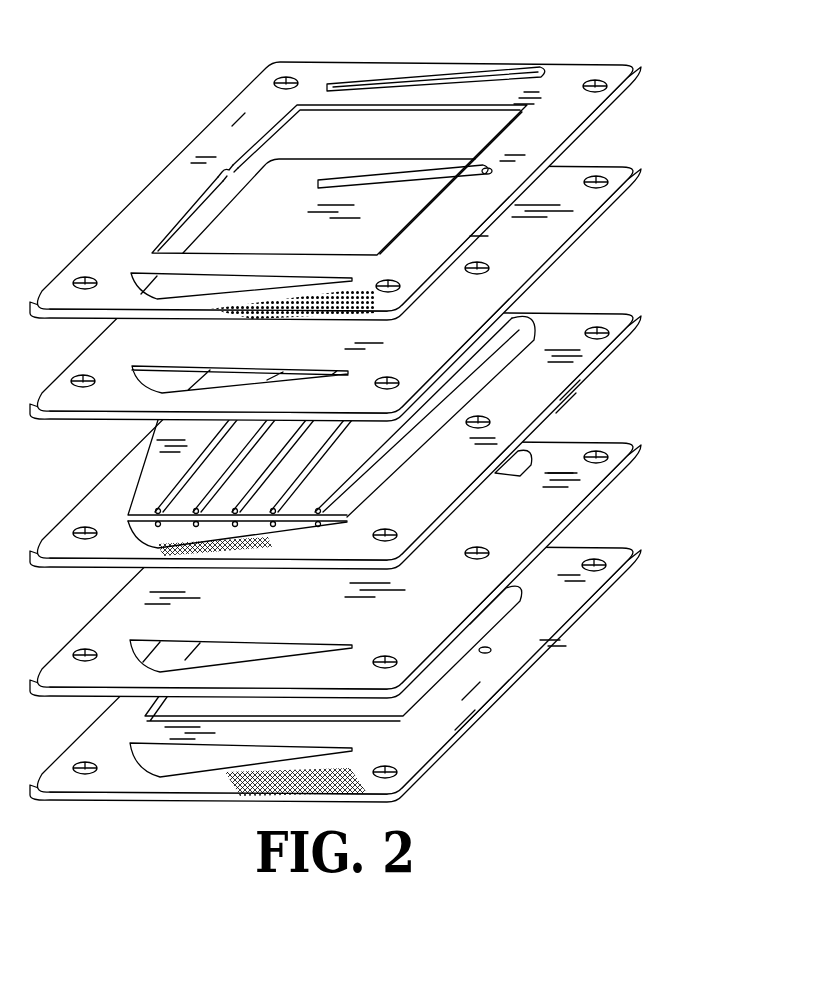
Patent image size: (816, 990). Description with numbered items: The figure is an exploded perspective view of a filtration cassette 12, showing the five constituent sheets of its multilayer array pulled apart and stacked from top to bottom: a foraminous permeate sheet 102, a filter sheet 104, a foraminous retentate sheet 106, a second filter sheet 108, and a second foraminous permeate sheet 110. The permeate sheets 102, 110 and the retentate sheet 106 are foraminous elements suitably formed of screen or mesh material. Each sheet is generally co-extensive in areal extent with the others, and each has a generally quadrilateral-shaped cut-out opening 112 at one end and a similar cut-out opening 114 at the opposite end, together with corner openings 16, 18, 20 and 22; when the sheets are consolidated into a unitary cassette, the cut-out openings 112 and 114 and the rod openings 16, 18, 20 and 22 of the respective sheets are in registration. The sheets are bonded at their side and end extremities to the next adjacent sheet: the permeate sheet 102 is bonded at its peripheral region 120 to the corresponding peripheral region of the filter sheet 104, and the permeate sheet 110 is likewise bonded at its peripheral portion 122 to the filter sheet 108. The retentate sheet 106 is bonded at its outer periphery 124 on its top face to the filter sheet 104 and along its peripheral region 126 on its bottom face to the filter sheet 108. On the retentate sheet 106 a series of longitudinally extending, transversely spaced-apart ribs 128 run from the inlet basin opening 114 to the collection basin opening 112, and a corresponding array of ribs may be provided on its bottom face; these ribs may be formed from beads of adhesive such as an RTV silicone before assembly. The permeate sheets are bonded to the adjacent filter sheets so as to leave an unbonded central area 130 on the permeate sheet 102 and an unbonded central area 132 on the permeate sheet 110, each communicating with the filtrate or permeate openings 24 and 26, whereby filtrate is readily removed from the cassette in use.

The cassette 12 is at (117, 156).
The corner opening 16 is at (392, 283).
The corner opening 18 is at (594, 80).
The corner opening 20 is at (287, 78).
The corner opening 22 is at (83, 280).
The permeate opening 24 is at (216, 165).
The permeate opening 26 is at (487, 176).
The foraminous permeate sheet 102 is at (640, 84).
The filter sheet 104 is at (640, 175).
The foraminous retentate sheet 106 is at (640, 325).
The filter sheet 108 is at (640, 460).
The foraminous permeate sheet 110 is at (640, 558).
The cut-out opening 112 is at (508, 75).
The cut-out opening 114 is at (235, 273).
The peripheral region 120 is at (235, 128).
The peripheral portion 122 is at (472, 695).
The outer periphery 124 is at (562, 380).
The peripheral region 126 is at (568, 400).
The ribs 128 is at (396, 448).
The unbonded central area 130 is at (360, 128).
The unbonded central area 132 is at (465, 722).